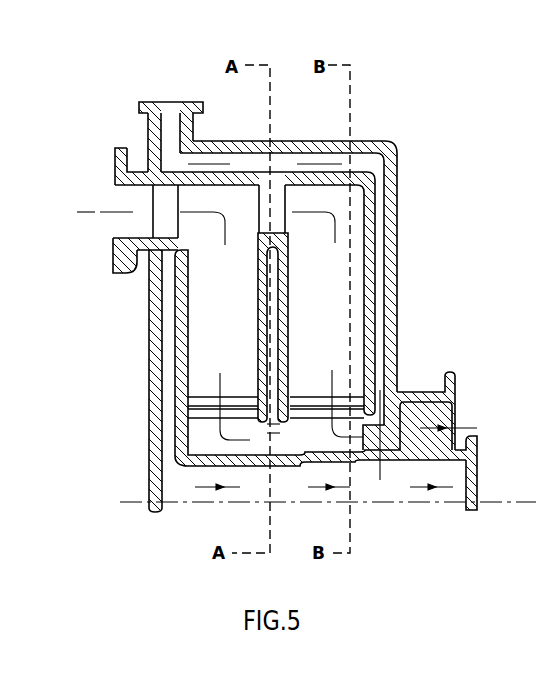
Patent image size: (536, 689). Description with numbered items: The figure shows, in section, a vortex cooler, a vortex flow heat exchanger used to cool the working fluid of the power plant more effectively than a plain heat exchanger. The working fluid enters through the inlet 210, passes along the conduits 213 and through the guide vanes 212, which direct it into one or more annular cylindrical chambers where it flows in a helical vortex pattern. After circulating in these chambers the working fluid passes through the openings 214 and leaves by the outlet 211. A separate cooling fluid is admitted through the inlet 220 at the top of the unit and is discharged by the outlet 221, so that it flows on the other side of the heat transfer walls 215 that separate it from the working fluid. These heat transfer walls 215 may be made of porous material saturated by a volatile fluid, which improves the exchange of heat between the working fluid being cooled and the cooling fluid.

The inlet 220 is at (152, 103).
The outlet 211 is at (122, 231).
The openings 214 is at (258, 207).
The heat transfer walls 215 is at (290, 272).
The guide vanes 212 is at (204, 396).
The inlet 210 is at (452, 400).
The conduits 213 is at (400, 441).
The outlet 221 is at (480, 472).